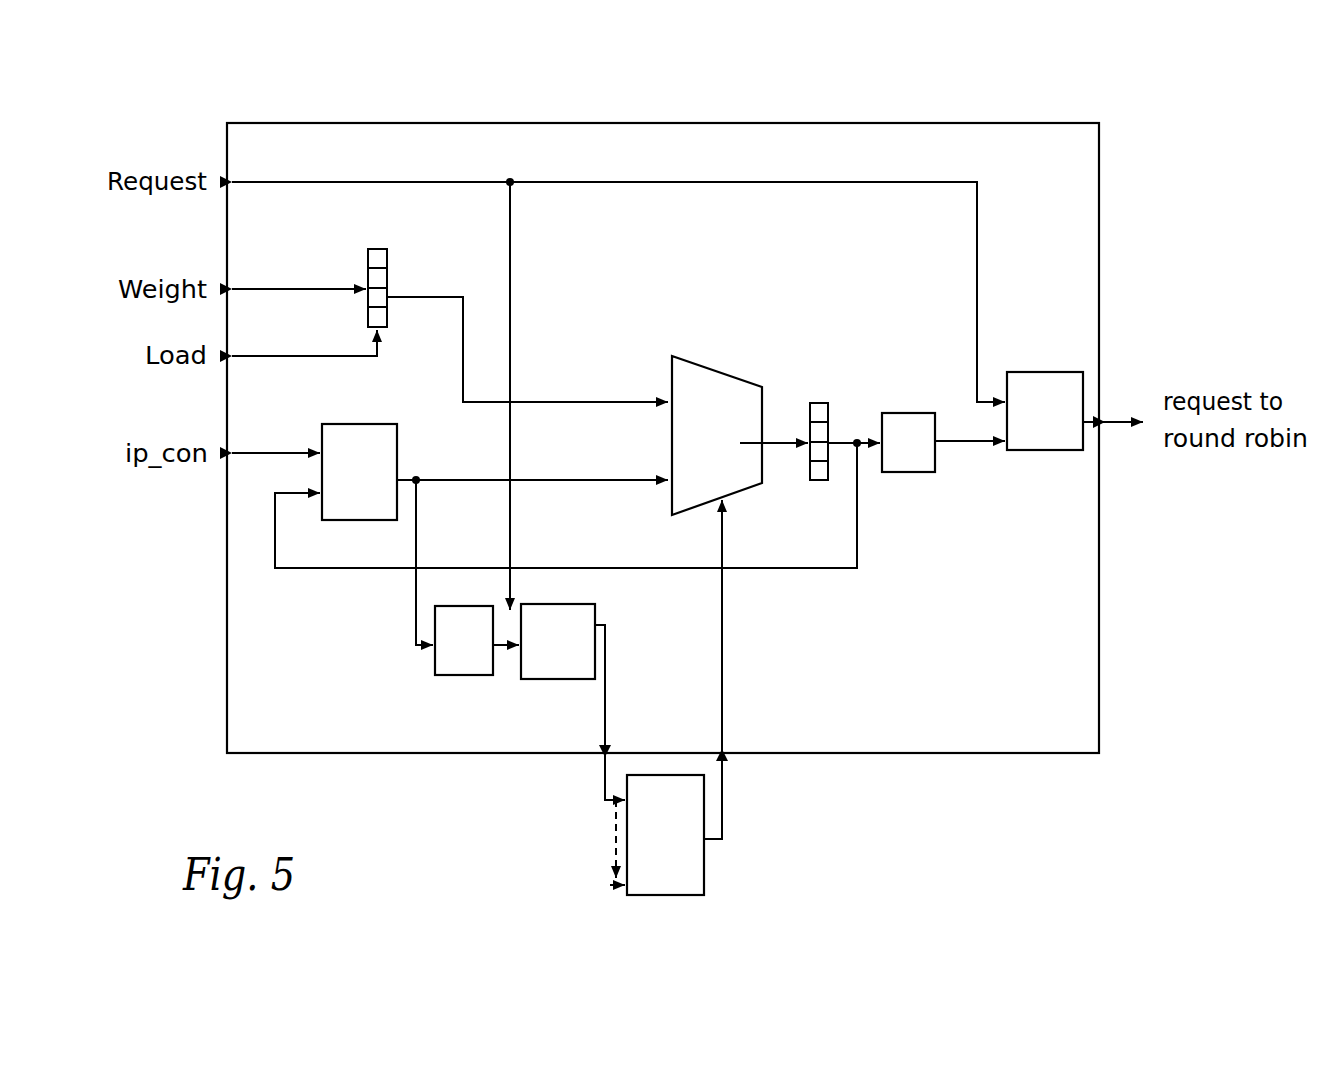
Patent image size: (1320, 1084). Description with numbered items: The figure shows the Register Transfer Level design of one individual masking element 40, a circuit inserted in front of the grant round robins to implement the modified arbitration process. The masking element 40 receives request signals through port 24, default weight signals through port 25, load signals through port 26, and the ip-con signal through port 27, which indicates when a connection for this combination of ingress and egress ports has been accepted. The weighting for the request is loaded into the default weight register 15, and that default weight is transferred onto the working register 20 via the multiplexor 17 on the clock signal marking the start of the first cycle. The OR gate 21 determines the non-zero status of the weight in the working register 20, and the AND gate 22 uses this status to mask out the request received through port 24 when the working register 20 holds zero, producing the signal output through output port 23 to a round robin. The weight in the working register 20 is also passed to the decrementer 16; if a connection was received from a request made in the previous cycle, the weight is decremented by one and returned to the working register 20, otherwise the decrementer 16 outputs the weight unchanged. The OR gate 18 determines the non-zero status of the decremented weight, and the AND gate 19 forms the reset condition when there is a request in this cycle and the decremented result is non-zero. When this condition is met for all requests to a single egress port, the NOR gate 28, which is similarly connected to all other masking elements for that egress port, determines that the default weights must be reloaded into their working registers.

The masking element 40 is at (662, 122).
The request port 24 is at (233, 181).
The default weight port 25 is at (234, 288).
The default weight register 15 is at (515, 307).
The load port 26 is at (234, 357).
The ip-con port 27 is at (223, 457).
The decrementer 16 is at (495, 534).
The multiplexor 17 is at (710, 378).
The working register 20 is at (821, 403).
The OR gate 21 is at (905, 472).
The AND gate 22 is at (1032, 452).
The output port 23 is at (1100, 420).
The OR gate 18 is at (458, 675).
The AND gate 19 is at (560, 668).
The NOR gate 28 is at (660, 897).